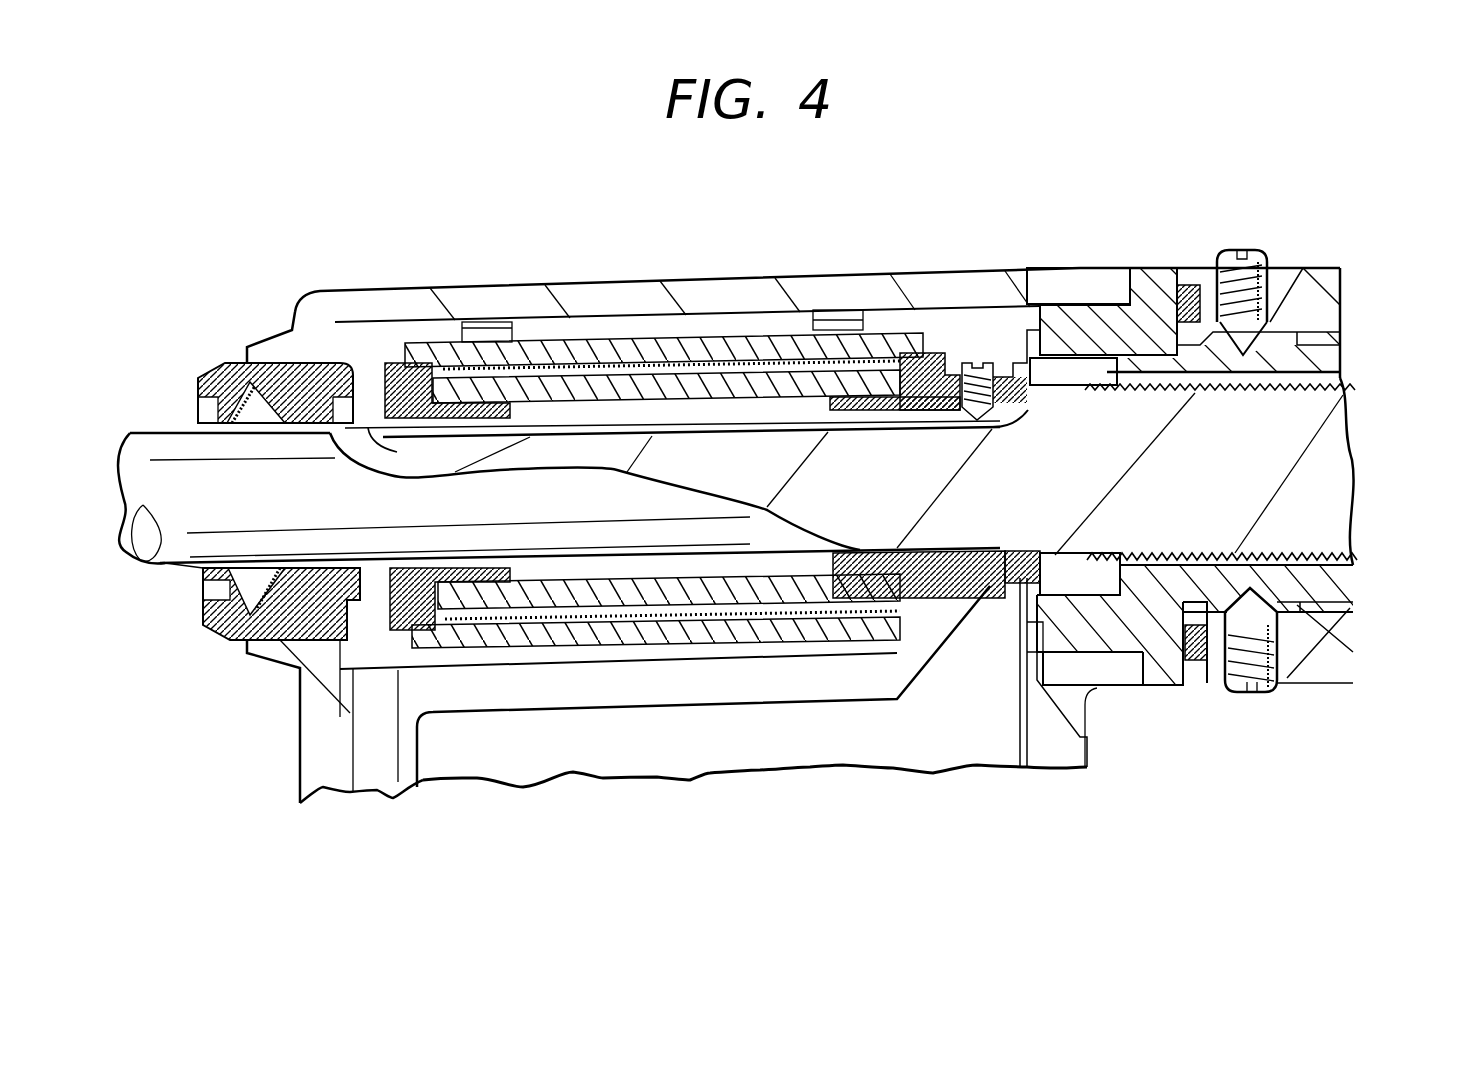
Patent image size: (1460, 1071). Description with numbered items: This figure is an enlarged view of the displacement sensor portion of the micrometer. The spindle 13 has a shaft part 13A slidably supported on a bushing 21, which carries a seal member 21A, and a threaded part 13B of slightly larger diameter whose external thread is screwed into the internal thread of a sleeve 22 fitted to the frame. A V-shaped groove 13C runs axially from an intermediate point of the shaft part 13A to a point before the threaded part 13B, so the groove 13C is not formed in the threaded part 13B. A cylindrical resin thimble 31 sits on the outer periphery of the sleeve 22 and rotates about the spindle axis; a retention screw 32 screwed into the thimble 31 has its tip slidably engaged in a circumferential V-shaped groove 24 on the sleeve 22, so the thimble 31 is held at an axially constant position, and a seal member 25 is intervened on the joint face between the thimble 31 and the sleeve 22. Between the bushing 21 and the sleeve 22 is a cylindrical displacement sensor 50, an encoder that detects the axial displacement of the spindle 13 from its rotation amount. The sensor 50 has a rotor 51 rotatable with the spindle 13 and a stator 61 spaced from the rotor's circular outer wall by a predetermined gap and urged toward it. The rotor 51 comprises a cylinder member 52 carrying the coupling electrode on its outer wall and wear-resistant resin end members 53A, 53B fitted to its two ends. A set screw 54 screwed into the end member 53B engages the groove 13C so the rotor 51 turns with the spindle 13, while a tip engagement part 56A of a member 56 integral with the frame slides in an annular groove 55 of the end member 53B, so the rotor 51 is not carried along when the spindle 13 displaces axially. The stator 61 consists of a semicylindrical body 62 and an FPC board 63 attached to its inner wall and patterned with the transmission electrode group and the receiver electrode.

The spindle 13 is at (175, 478).
The shaft part 13A is at (168, 598).
The threaded part 13B is at (1335, 528).
The V-shaped groove 13C is at (542, 437).
The bushing 21 is at (233, 345).
The seal member 21A is at (232, 395).
The sleeve 22 is at (1155, 290).
The V-shaped groove 24 is at (1290, 610).
The seal member 25 is at (1188, 283).
The thimble 31 is at (1320, 285).
The retention screw 32 is at (1262, 248).
The cylindrical displacement sensor 50 is at (965, 196).
The rotor 51 is at (940, 348).
The cylinder member 52 is at (608, 582).
The end member 53A is at (410, 590).
The end member 53B is at (860, 553).
The set screw 54 is at (990, 372).
The annular groove 55 is at (1003, 551).
The member 56 is at (890, 745).
The tip engagement part 56A is at (1022, 600).
The stator 61 is at (888, 330).
The semicylindrical body 62 is at (622, 340).
The FPC board 63 is at (703, 350).